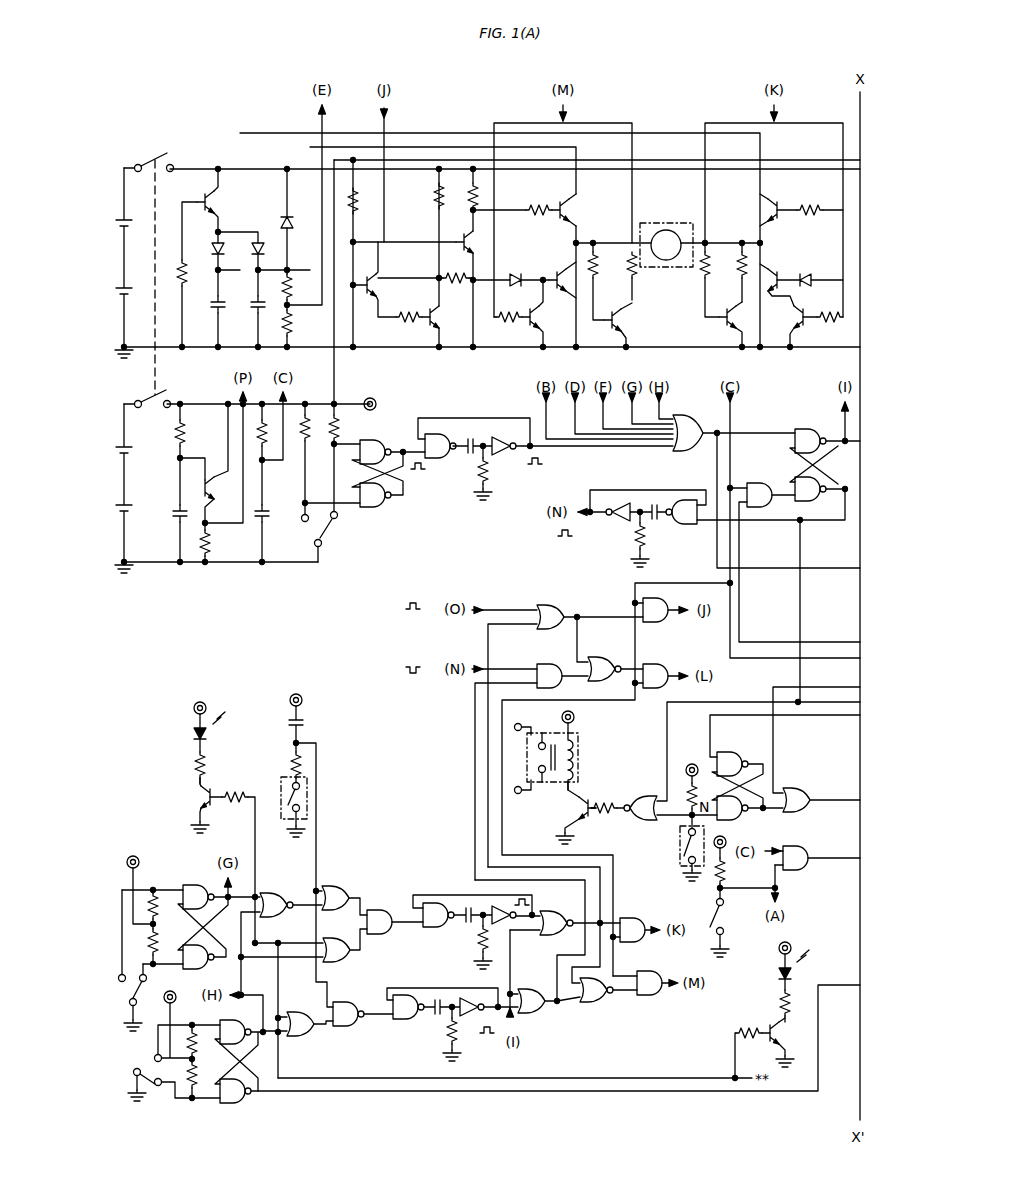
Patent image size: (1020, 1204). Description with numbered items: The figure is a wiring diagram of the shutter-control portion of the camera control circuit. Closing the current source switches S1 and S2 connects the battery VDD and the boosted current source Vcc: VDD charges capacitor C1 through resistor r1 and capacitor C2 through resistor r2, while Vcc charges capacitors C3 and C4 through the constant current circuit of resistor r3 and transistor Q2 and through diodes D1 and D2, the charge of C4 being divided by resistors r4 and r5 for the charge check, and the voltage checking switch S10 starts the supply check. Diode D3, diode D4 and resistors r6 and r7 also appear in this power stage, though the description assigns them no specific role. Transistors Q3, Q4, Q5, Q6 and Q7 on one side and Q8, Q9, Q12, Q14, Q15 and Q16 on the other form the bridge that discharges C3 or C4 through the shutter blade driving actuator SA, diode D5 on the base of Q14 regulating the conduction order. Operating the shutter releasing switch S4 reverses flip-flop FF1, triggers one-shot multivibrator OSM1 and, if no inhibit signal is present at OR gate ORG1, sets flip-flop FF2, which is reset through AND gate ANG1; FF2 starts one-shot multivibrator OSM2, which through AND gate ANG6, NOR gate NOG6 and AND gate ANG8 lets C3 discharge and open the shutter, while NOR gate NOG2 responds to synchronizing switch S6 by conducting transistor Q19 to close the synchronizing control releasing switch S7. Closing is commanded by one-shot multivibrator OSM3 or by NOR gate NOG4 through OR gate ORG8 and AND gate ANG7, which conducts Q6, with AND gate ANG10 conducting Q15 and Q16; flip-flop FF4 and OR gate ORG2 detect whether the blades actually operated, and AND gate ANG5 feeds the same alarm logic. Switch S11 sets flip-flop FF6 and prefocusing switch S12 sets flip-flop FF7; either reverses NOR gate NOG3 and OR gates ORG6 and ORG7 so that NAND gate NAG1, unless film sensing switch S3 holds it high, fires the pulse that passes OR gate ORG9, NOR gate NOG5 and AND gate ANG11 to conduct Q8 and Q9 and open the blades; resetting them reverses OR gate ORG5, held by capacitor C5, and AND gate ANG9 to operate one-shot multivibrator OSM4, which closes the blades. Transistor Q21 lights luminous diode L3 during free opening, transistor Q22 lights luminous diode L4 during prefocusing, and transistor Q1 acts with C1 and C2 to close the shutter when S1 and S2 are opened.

The current source switch S2 is at (149, 157).
The current source Vcc is at (134, 257).
The resistor r3 is at (177, 274).
The transistor Q2 is at (201, 200).
The diode D1 is at (213, 250).
The diode D2 is at (251, 251).
The diode D3 is at (279, 219).
The capacitor C3 is at (208, 308).
The capacitor C4 is at (248, 308).
The resistor r4 is at (296, 290).
The resistor r5 is at (297, 328).
The transistor Q3 is at (366, 279).
The transistor Q4 is at (476, 242).
The transistor Q5 is at (534, 210).
The transistor Q6 is at (429, 317).
The transistor Q7 is at (559, 275).
The transistor Q8 is at (529, 313).
The transistor Q9 is at (620, 325).
The diode D4 is at (511, 269).
The resistor r6 is at (601, 281).
The shutter blade driving actuator SA is at (666, 233).
The resistor r7 is at (715, 280).
The transistor Q12 is at (790, 210).
The transistor Q14 is at (781, 278).
The transistor Q15 is at (806, 326).
The transistor Q16 is at (719, 324).
The diode D5 is at (821, 270).
The current source switch S1 is at (147, 410).
The current source battery VDD is at (138, 483).
The resistor r1 is at (192, 454).
The capacitor C1 is at (168, 533).
The transistor Q1 is at (204, 483).
The resistor r2 is at (256, 454).
The capacitor C2 is at (272, 525).
The shutter releasing switch S4 is at (319, 537).
The flip-flop circuit FF1 is at (409, 430).
The one-shot multivibrator circuit OSM1 is at (538, 448).
The OR gate ORG1 is at (764, 483).
The AND gate ANG1 is at (796, 552).
The flip-flop circuit FF2 is at (837, 499).
The one-shot multivibrator circuit OSM2 is at (642, 520).
The OR gate ORG8 is at (565, 726).
The AND gate ANG6 is at (553, 666).
The NOR gate NOG6 is at (612, 659).
The AND gate ANG7 is at (661, 620).
The AND gate ANG8 is at (661, 667).
The NOR gate NOG2 is at (641, 799).
The transistor Q19 is at (571, 813).
The synchronizing control releasing switch S7 is at (541, 752).
The flip-flop circuit FF4 is at (747, 777).
The OR gate ORG2 is at (819, 790).
The synchronizing operation switch S6 is at (680, 853).
The voltage checking switch S10 is at (732, 928).
The AND gate ANG5 is at (812, 871).
The luminous diode L4 is at (780, 982).
The transistor Q22 is at (776, 1048).
The luminous diode L3 is at (195, 743).
The transistor Q21 is at (215, 860).
The capacitor C5 is at (307, 718).
The film sensing switch S3 is at (280, 786).
The flip-flop circuit FF6 is at (177, 912).
The free opening and closing switch S11 is at (131, 960).
The NOR gate NOG3 is at (289, 897).
The OR gate ORG5 is at (344, 892).
The OR gate ORG6 is at (345, 956).
The AND gate ANG9 is at (394, 914).
The one-shot multivibrator circuit OSM4 is at (476, 932).
The NOR gate NOG4 is at (554, 925).
The AND gate ANG10 is at (642, 920).
The NOR gate NOG5 is at (606, 1004).
The AND gate ANG11 is at (649, 995).
The OR gate ORG9 is at (530, 959).
The one-shot multivibrator circuit OSM3 is at (452, 1024).
The NAND gate NAG1 is at (353, 1029).
The OR gate ORG7 is at (300, 1038).
The flip-flop circuit FF7 is at (270, 1106).
The prefocusing switch S12 is at (170, 1046).